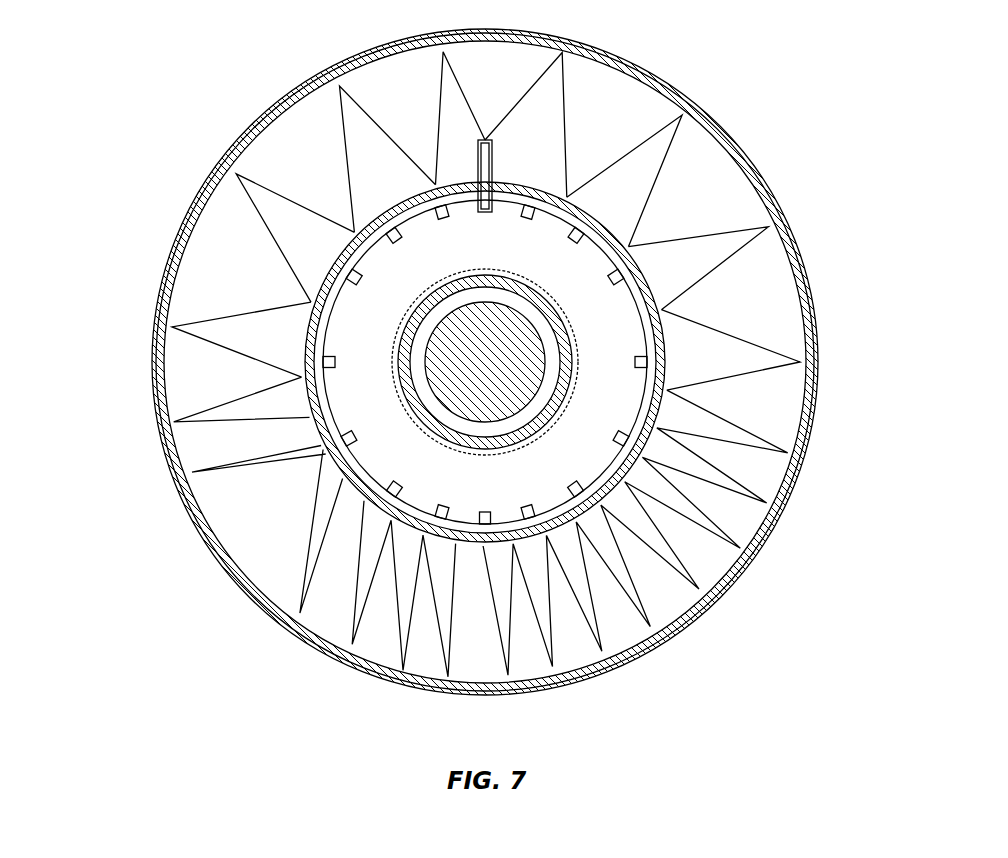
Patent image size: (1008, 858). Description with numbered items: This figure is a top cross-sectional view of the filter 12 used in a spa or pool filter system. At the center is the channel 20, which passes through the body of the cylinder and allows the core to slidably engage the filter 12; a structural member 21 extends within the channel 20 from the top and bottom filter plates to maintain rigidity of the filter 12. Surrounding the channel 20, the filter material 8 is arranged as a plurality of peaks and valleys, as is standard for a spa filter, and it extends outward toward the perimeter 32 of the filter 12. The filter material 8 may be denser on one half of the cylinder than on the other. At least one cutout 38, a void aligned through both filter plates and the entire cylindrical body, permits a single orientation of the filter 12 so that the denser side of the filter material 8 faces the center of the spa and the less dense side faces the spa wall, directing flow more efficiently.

The filter 12 is at (768, 96).
The filter material 8 is at (764, 355).
The perimeter 32 is at (778, 519).
The channel 20 is at (703, 608).
The structural member 21 is at (337, 453).
The cutout 38 is at (498, 162).